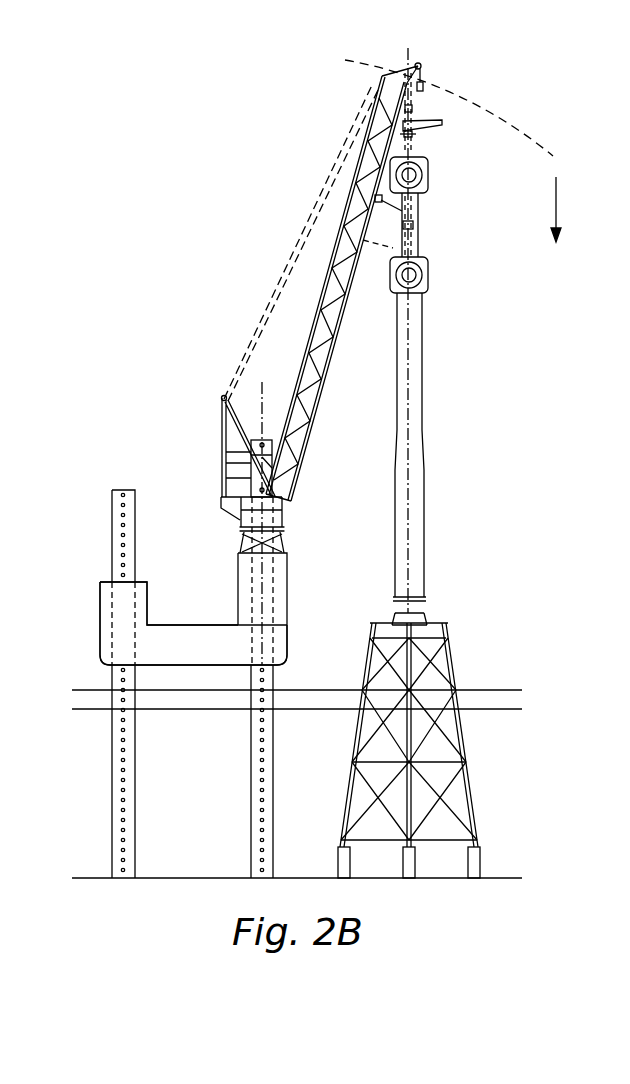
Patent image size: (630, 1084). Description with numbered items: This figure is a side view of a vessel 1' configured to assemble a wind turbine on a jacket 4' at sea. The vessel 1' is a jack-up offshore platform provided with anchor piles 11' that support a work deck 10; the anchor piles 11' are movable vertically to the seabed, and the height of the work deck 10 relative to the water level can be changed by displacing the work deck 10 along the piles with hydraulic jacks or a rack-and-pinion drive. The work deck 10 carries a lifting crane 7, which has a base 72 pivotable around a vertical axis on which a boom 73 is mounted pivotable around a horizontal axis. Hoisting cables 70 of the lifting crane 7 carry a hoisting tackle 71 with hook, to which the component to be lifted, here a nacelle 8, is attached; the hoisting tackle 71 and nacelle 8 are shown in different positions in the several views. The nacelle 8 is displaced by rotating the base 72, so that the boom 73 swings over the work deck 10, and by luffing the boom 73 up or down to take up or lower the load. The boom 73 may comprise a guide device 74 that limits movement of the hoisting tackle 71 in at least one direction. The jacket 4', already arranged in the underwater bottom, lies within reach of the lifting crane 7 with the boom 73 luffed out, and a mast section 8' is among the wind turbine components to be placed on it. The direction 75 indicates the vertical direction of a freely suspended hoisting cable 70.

The vessel 1' is at (152, 583).
The work deck 10 is at (199, 624).
The anchor piles 11' is at (150, 684).
The lifting crane 7 is at (231, 322).
The base 72 is at (263, 583).
The boom 73 is at (330, 345).
The hoisting cables 70 is at (413, 136).
The nacelle 8 is at (440, 227).
The guide device 74 is at (401, 212).
The hoisting tackle 71 is at (413, 229).
The direction 75 is at (558, 199).
The mast section 8' is at (445, 409).
The jacket 4' is at (441, 750).